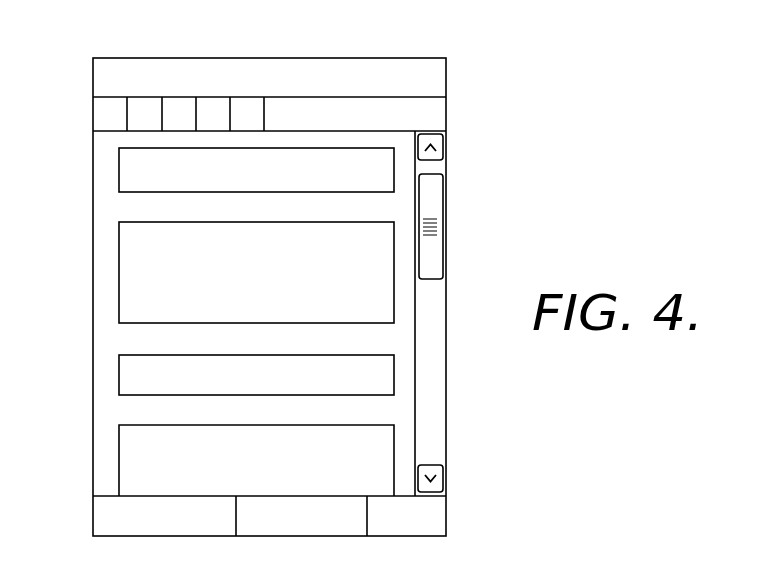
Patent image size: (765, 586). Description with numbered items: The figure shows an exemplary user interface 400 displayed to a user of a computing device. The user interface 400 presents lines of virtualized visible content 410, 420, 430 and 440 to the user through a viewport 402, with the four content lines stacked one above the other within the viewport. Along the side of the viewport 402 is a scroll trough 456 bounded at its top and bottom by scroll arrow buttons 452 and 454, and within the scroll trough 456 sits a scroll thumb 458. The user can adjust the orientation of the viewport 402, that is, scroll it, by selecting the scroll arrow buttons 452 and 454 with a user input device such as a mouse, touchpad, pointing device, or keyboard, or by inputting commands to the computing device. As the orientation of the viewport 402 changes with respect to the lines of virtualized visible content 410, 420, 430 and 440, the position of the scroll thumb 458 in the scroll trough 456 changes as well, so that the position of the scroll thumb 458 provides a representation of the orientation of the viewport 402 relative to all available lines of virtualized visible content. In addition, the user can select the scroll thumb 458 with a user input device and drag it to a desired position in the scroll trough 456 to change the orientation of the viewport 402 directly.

The user interface 400 is at (140, 58).
The viewport 402 is at (93, 131).
The line of virtualized visible content 410 is at (119, 176).
The line of virtualized visible content 420 is at (119, 274).
The line of virtualized visible content 430 is at (119, 379).
The line of virtualized visible content 440 is at (119, 465).
The scroll arrow button 452 is at (446, 150).
The scroll arrow button 454 is at (444, 478).
The scroll trough 456 is at (437, 360).
The scroll thumb 458 is at (444, 225).